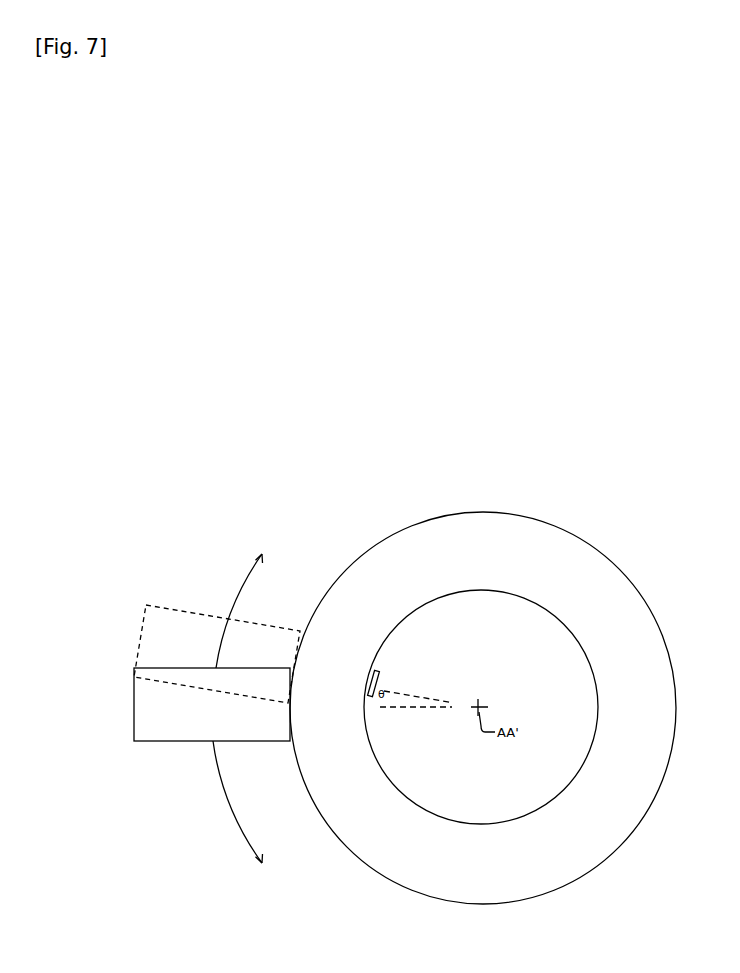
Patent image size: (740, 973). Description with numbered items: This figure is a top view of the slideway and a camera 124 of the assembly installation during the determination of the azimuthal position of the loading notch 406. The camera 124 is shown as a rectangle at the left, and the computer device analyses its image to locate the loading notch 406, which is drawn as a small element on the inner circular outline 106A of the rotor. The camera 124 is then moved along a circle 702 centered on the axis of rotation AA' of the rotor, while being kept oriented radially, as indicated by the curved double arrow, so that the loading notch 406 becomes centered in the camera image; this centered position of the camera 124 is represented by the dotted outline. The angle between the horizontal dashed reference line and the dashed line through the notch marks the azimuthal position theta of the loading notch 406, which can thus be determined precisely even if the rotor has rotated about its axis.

The circle 702 is at (615, 562).
The rotating body (circular member) 106A is at (595, 688).
The loading notch 406 is at (370, 678).
The camera 124 is at (182, 741).